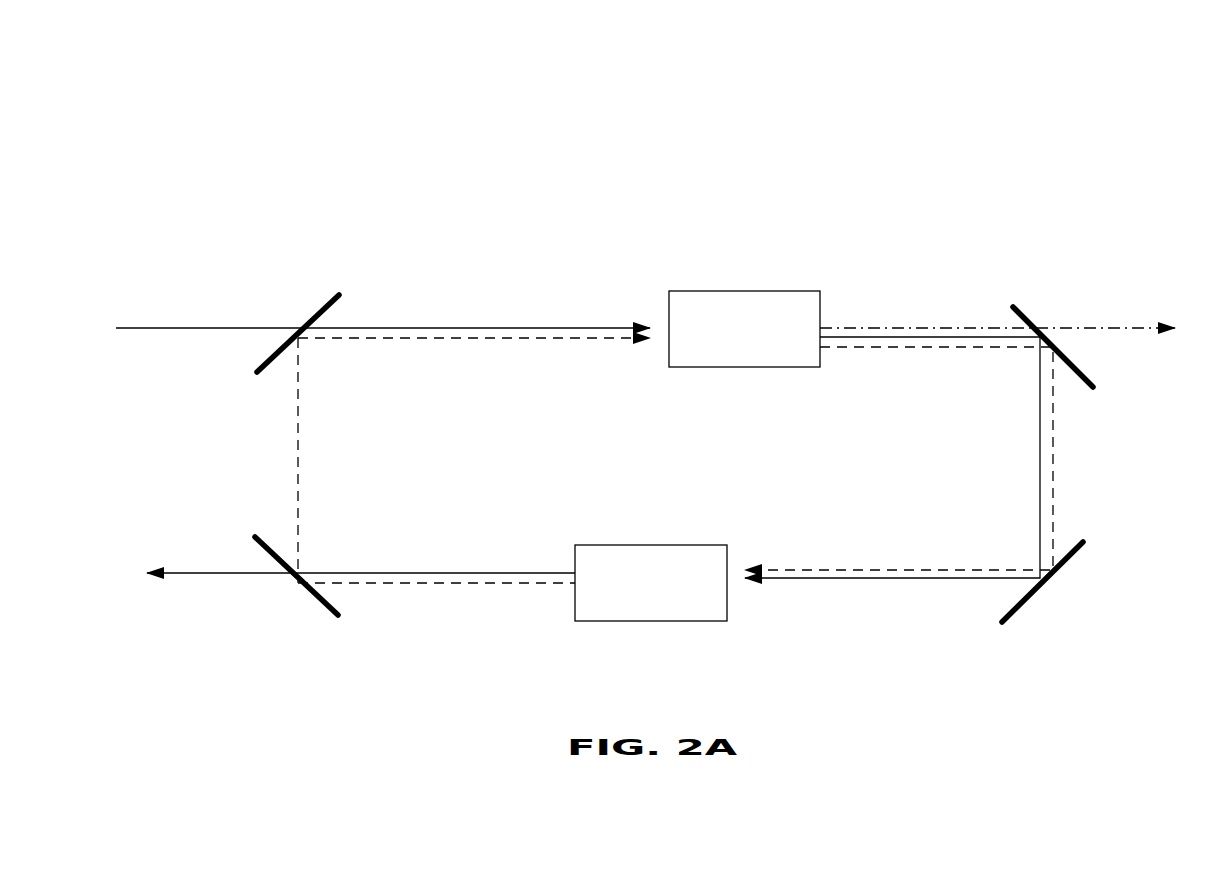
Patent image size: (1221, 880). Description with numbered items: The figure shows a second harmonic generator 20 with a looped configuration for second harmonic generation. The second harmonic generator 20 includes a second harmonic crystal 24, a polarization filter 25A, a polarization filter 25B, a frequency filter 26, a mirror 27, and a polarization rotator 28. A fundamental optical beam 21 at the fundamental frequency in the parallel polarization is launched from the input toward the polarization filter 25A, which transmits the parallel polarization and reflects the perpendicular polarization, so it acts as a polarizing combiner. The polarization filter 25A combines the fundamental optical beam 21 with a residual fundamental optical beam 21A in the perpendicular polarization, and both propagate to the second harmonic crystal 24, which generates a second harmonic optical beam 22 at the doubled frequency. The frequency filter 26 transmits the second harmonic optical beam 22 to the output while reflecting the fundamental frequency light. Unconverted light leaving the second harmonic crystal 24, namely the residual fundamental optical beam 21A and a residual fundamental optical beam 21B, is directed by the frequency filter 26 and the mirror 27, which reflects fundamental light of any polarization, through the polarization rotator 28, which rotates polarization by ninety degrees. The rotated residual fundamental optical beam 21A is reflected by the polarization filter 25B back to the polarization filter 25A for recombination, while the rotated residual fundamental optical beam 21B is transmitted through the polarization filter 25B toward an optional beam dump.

The second harmonic generator 20 is at (252, 182).
The fundamental optical beam 21 is at (148, 328).
The residual fundamental optical beam 21A is at (462, 340).
The residual fundamental optical beam 21B is at (918, 350).
The second harmonic optical beam 22 is at (1092, 328).
The second harmonic crystal 24 is at (742, 291).
The polarization filter 25A is at (317, 283).
The polarization filter 25B is at (340, 632).
The frequency filter 26 is at (1008, 292).
The mirror 27 is at (1062, 583).
The polarization rotator 28 is at (641, 545).